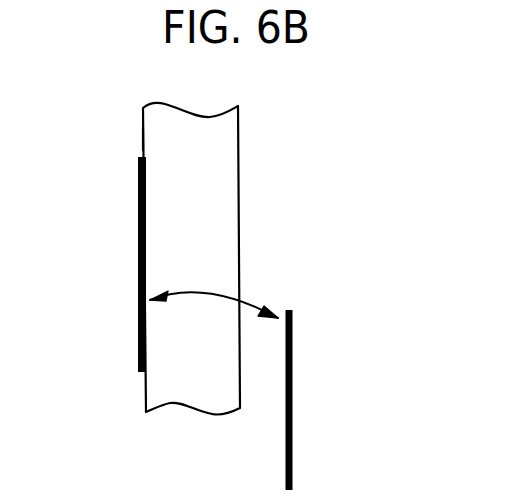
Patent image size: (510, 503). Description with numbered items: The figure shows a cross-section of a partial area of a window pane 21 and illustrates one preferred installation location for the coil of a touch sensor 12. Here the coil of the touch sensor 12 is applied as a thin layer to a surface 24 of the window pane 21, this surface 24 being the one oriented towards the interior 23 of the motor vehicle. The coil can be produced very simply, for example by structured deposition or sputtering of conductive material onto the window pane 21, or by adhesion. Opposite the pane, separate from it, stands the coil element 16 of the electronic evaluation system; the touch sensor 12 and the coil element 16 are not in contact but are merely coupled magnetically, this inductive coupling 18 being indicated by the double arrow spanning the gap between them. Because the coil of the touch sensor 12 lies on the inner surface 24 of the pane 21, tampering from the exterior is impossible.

The touch sensor 12 is at (140, 342).
The coil element 16 is at (293, 422).
The inductive coupling 18 is at (243, 300).
The window pane 21 is at (220, 180).
The interior 23 is at (82, 287).
The surface 24 is at (142, 138).